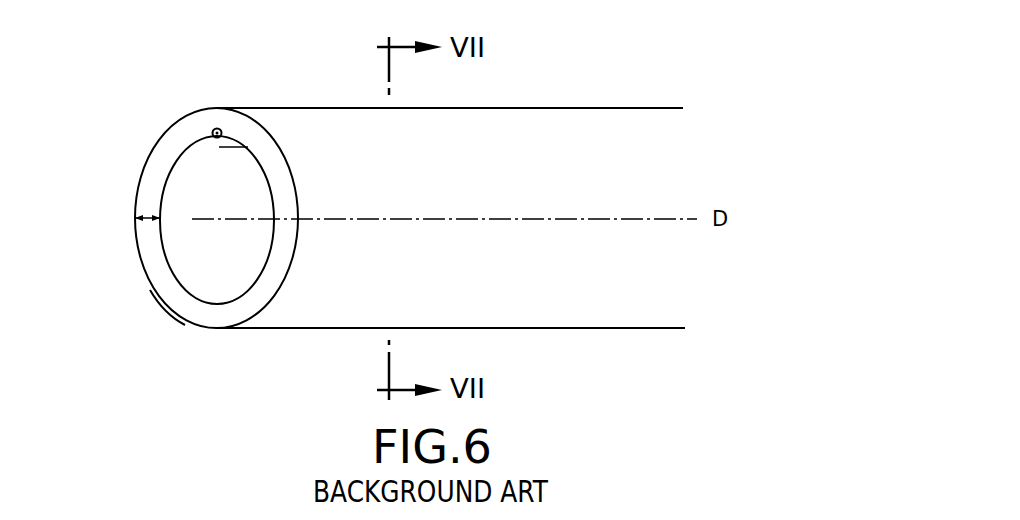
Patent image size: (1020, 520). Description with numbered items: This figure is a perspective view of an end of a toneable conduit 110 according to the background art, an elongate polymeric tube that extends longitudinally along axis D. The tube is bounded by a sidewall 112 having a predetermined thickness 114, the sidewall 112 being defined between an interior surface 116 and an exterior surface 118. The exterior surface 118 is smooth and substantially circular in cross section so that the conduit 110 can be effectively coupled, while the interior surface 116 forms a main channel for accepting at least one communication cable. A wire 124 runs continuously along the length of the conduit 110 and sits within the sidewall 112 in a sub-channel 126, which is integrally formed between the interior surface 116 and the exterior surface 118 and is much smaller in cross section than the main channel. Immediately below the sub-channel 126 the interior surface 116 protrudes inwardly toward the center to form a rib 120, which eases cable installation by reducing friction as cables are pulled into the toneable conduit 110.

The toneable conduit 110 is at (553, 346).
The sidewall 112 is at (265, 292).
The predetermined thickness 114 is at (150, 222).
The interior surface 116 is at (178, 284).
The exterior surface 118 is at (172, 312).
The rib 120 is at (213, 145).
The wire 124 is at (212, 130).
The sub-channel 126 is at (219, 124).